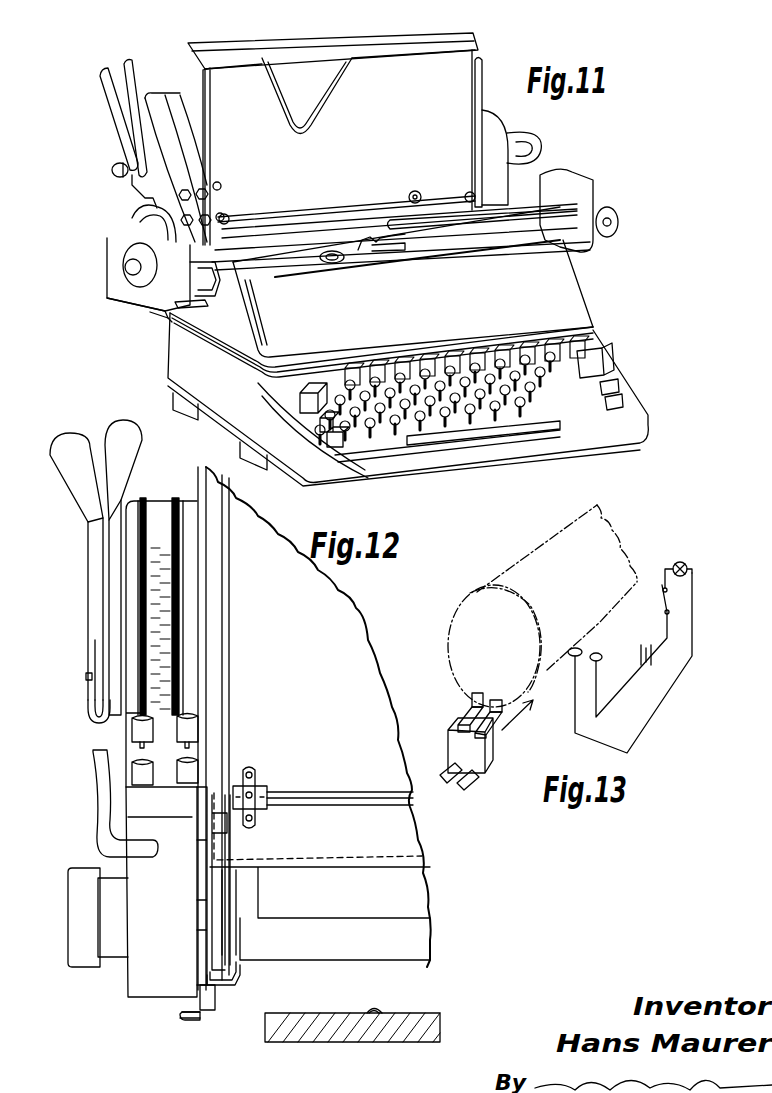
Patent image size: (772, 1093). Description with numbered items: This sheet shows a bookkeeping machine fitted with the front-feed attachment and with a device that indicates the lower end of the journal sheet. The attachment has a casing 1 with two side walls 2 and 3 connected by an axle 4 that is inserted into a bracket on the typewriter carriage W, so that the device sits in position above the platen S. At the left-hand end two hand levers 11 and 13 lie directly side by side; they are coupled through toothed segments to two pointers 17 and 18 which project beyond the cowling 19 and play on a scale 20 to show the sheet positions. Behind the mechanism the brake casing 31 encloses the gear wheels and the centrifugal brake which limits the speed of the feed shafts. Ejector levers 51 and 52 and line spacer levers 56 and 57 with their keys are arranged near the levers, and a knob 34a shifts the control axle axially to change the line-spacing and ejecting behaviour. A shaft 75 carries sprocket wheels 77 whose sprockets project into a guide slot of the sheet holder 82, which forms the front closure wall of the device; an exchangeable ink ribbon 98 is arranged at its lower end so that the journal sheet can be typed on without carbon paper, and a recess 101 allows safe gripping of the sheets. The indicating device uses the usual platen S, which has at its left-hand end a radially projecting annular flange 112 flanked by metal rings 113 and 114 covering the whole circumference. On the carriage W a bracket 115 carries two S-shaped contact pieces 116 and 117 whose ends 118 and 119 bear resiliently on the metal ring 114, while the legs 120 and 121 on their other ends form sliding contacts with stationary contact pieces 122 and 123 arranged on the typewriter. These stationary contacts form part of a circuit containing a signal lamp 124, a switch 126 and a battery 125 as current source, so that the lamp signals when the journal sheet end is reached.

In FIG. 11, the casing 1 is at (452, 41).
In FIG. 11, the side wall 2 is at (211, 102).
In FIG. 11, the side wall 3 is at (481, 78).
In FIG. 11, the axle 4 is at (538, 139).
In FIG. 11, the hand lever 11 is at (108, 74).
In FIG. 12, the hand lever 11 is at (65, 434).
In FIG. 11, the hand lever 13 is at (132, 66).
In FIG. 12, the hand lever 13 is at (122, 421).
In FIG. 12, the pointer 17 is at (174, 498).
In FIG. 12, the pointer 18 is at (147, 498).
In FIG. 11, the cowling 19 is at (172, 117).
In FIG. 12, the cowling 19 is at (130, 542).
In FIG. 11, the scale 20 is at (185, 140).
In FIG. 12, the scale 20 is at (145, 597).
In FIG. 11, the brake casing 31 is at (498, 133).
In FIG. 11, the knob 34a is at (112, 170).
In FIG. 12, the knob 34a is at (88, 706).
In FIG. 11, the ejector lever 51 is at (222, 216).
In FIG. 12, the ejector lever 51 is at (188, 770).
In FIG. 11, the ejector lever 52 is at (212, 212).
In FIG. 12, the ejector lever 52 is at (140, 777).
In FIG. 11, the line spacer lever 56 is at (219, 187).
In FIG. 12, the line spacer lever 56 is at (194, 720).
In FIG. 11, the line spacer lever 57 is at (179, 194).
In FIG. 12, the line spacer lever 57 is at (145, 727).
In FIG. 11, the shaft 75 is at (336, 207).
In FIG. 12, the shaft 75 is at (327, 793).
In FIG. 11, the sprocket wheel 77 is at (415, 191).
In FIG. 12, the sprocket wheel 77 is at (256, 775).
In FIG. 11, the sheet holder 82 is at (348, 80).
In FIG. 12, the sheet holder 82 is at (352, 662).
In FIG. 11, the ink ribbon 98 is at (361, 240).
In FIG. 11, the recess 101 is at (300, 95).
In FIG. 12, the annular flange 112 is at (228, 892).
In FIG. 12, the metal ring 113 is at (223, 940).
In FIG. 11, the metal ring 114 is at (211, 282).
In FIG. 12, the metal ring 114 is at (237, 912).
In FIG. 13, the metal ring 114 is at (531, 620).
In FIG. 11, the bracket 115 is at (196, 306).
In FIG. 12, the bracket 115 is at (210, 1005).
In FIG. 12, the S-shaped contact piece 116 is at (254, 985).
In FIG. 13, the S-shaped contact piece 116 is at (457, 718).
In FIG. 12, the S-shaped contact piece 117 is at (221, 982).
In FIG. 13, the S-shaped contact piece 117 is at (526, 723).
In FIG. 13, the end of contact piece 118 is at (475, 693).
In FIG. 13, the end of contact piece 119 is at (494, 700).
In FIG. 11, the leg 120 is at (133, 310).
In FIG. 12, the leg 120 is at (198, 1018).
In FIG. 13, the leg 120 is at (444, 785).
In FIG. 11, the leg 121 is at (167, 322).
In FIG. 12, the leg 121 is at (210, 1030).
In FIG. 13, the leg 121 is at (459, 781).
In FIG. 12, the stationary contact piece 122 is at (374, 1008).
In FIG. 13, the stationary contact piece 122 is at (582, 648).
In FIG. 12, the stationary contact piece 123 is at (410, 998).
In FIG. 13, the stationary contact piece 123 is at (602, 657).
In FIG. 11, the signal lamp 124 is at (332, 264).
In FIG. 13, the signal lamp 124 is at (677, 562).
In FIG. 13, the current source (battery) 125 is at (654, 656).
In FIG. 13, the switch 126 is at (663, 607).
In FIG. 11, the typewriter carriage W is at (140, 228).
In FIG. 12, the typewriter carriage W is at (148, 978).
In FIG. 11, the platen S is at (553, 228).
In FIG. 12, the platen S is at (413, 940).